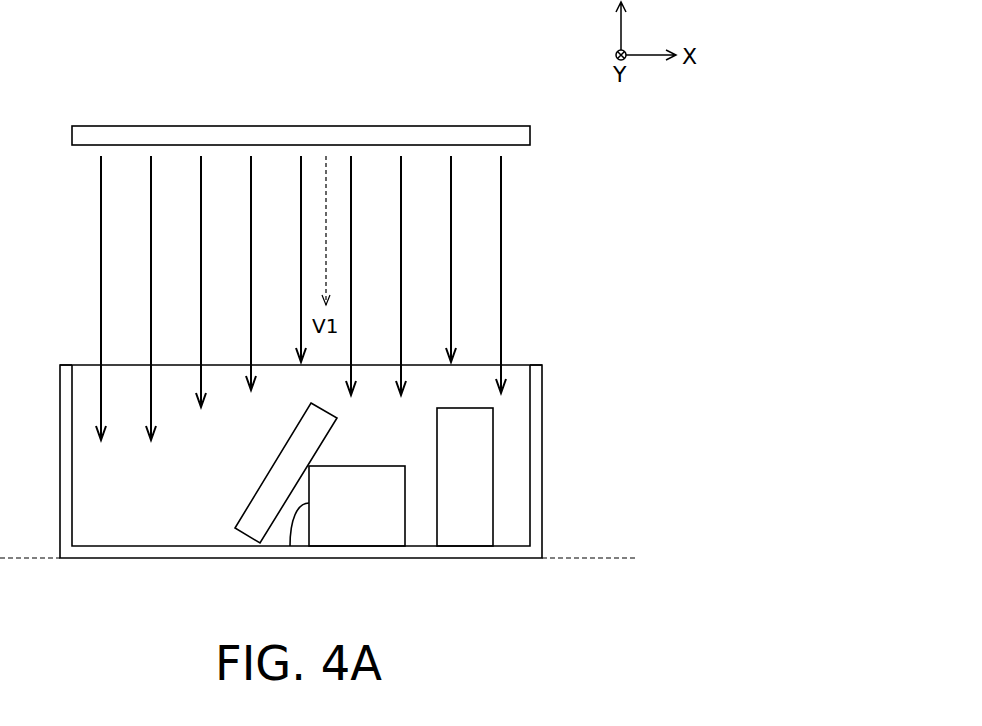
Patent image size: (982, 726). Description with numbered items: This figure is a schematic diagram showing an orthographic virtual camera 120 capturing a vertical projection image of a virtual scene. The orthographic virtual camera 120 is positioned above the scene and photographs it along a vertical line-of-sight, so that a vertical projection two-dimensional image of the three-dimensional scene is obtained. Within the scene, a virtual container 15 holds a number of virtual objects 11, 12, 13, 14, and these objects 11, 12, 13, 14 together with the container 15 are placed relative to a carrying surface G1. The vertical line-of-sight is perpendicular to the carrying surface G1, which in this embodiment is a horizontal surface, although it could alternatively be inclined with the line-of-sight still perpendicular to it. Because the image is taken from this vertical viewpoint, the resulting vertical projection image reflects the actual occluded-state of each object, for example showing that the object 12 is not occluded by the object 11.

The orthographic virtual camera 120 is at (512, 139).
The virtual container 15 is at (535, 395).
The virtual object 11 is at (368, 512).
The virtual object 12 is at (462, 508).
The virtual object 13 is at (272, 497).
The virtual object 14 is at (303, 528).
The carrying surface G1 is at (612, 558).